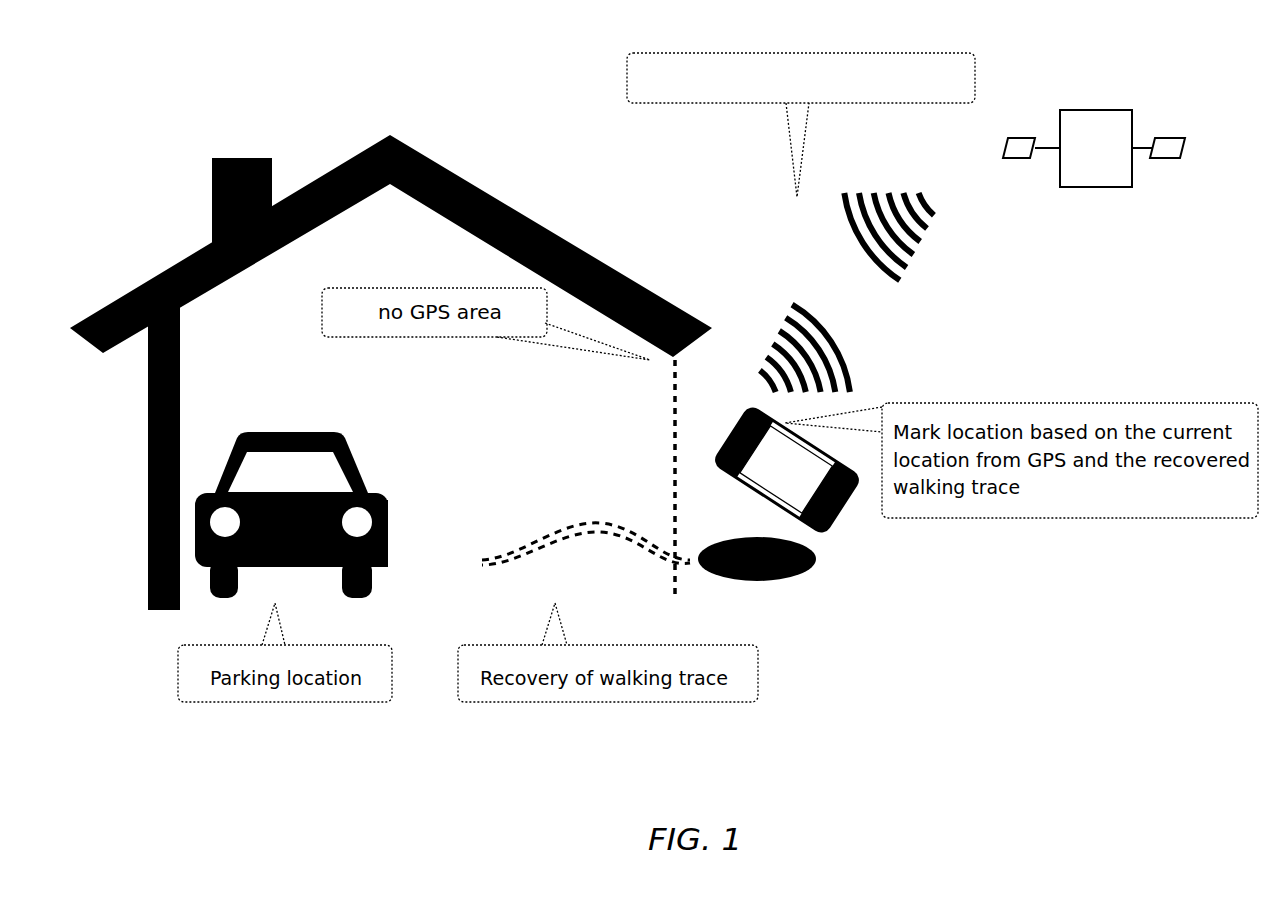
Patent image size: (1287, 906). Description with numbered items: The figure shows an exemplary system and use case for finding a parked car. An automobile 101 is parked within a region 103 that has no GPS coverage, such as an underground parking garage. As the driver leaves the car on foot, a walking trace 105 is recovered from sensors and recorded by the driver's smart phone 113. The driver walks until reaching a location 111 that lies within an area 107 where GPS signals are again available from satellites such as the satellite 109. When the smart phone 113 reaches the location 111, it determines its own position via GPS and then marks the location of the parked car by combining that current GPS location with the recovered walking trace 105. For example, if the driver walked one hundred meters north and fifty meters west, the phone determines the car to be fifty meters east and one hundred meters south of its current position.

The automobile 101 is at (292, 438).
The region having no GPS coverage 103 is at (480, 190).
The walking trace 105 is at (520, 508).
The area where GPS signals are available 107 is at (977, 63).
The satellite 109 is at (1098, 110).
The location 111 is at (807, 572).
The smart phone 113 is at (855, 518).